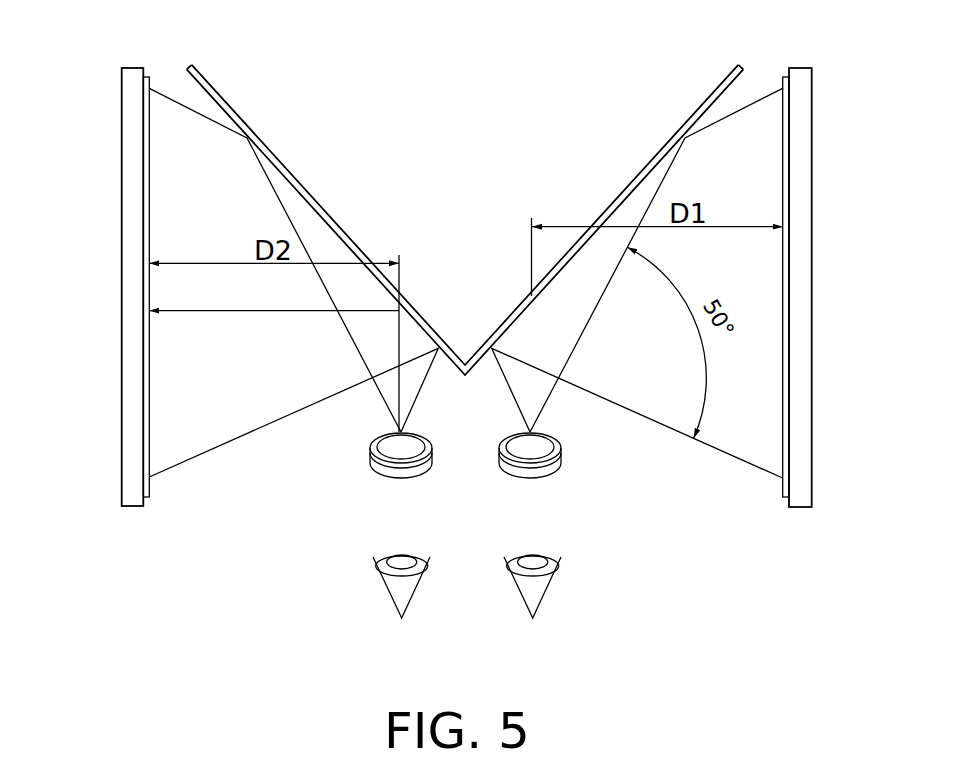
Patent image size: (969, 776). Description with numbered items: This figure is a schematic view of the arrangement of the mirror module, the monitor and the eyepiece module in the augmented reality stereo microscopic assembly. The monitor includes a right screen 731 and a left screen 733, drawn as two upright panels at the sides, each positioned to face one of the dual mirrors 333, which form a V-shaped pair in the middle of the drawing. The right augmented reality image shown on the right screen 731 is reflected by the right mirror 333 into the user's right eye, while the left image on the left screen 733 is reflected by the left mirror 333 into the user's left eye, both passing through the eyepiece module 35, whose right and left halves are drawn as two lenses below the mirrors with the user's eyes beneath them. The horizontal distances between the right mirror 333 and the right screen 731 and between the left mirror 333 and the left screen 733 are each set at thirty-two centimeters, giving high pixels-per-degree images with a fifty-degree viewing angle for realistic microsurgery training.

The mirror 333 is at (246, 129).
The right screen 731 is at (800, 233).
The left screen 733 is at (130, 233).
The eyepiece module 35 is at (368, 483).